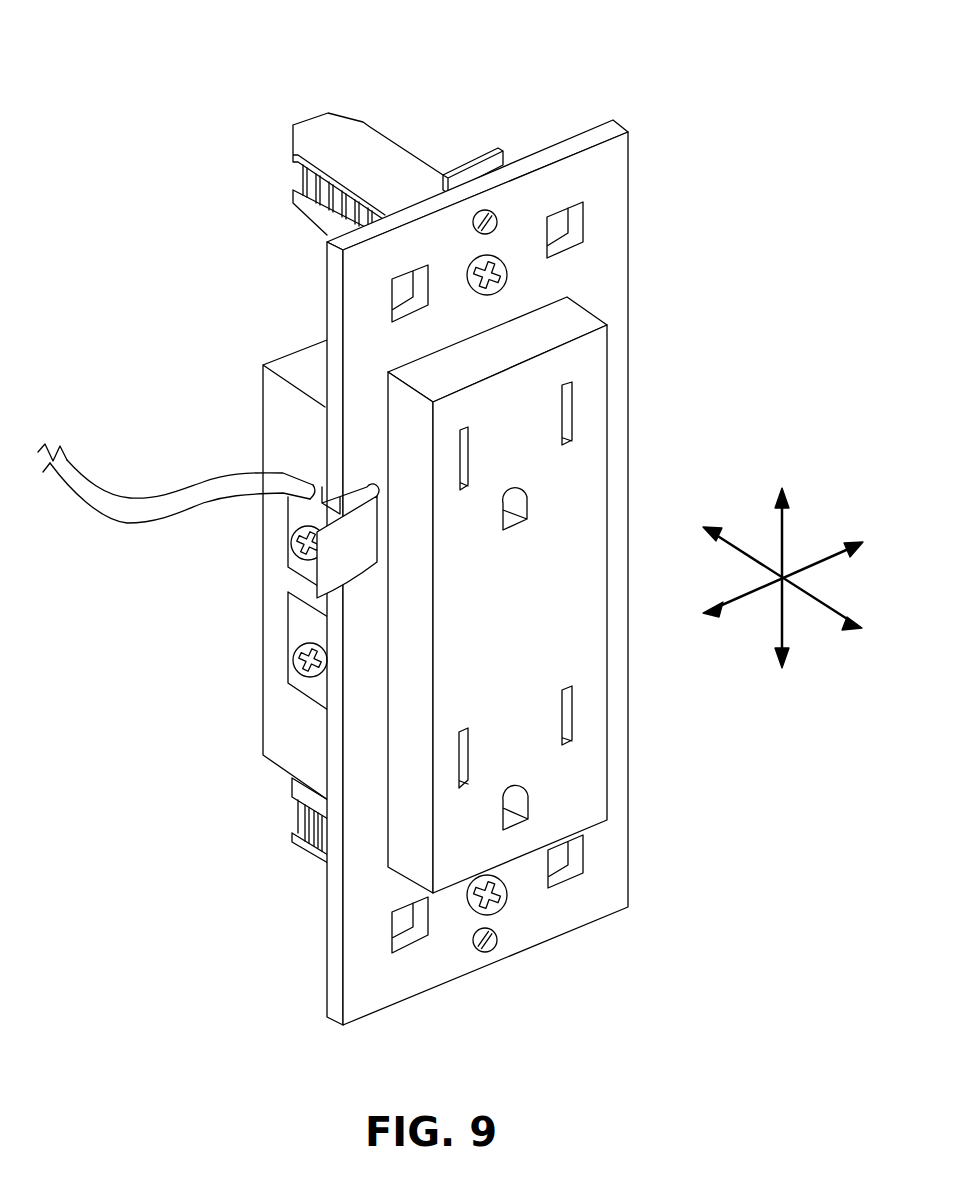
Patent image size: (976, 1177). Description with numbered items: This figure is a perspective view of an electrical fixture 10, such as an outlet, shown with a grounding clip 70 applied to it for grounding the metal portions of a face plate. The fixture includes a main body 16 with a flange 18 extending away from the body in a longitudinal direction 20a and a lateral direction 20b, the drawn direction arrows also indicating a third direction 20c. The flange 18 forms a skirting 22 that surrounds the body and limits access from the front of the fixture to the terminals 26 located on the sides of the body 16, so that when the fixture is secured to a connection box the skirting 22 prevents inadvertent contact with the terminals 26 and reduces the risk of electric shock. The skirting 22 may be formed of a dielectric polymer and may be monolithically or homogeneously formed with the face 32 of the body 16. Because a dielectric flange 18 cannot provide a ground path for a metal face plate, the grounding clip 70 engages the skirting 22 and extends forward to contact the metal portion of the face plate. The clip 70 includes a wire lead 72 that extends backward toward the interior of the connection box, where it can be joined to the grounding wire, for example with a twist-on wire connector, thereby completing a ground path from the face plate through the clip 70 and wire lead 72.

The electrical fixture 10 is at (673, 94).
The main body 16 is at (216, 703).
The flange 18 is at (630, 201).
The longitudinal direction 20a is at (784, 515).
The lateral direction 20b is at (833, 557).
The depth axis 20c is at (822, 608).
The skirting 22 is at (350, 263).
The terminals 26 is at (298, 657).
The face 32 is at (503, 684).
The grounding clip 70 is at (382, 533).
The wire lead 72 is at (107, 503).